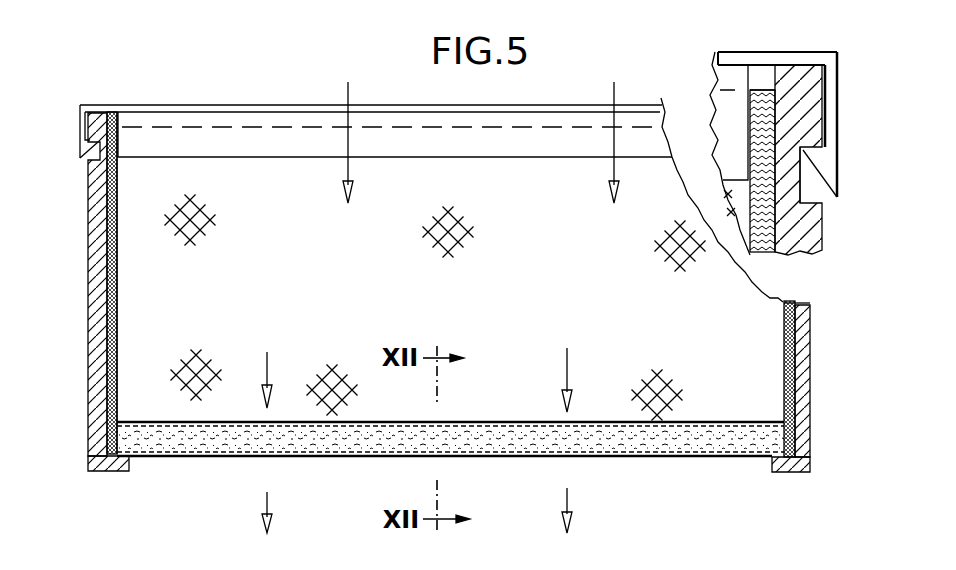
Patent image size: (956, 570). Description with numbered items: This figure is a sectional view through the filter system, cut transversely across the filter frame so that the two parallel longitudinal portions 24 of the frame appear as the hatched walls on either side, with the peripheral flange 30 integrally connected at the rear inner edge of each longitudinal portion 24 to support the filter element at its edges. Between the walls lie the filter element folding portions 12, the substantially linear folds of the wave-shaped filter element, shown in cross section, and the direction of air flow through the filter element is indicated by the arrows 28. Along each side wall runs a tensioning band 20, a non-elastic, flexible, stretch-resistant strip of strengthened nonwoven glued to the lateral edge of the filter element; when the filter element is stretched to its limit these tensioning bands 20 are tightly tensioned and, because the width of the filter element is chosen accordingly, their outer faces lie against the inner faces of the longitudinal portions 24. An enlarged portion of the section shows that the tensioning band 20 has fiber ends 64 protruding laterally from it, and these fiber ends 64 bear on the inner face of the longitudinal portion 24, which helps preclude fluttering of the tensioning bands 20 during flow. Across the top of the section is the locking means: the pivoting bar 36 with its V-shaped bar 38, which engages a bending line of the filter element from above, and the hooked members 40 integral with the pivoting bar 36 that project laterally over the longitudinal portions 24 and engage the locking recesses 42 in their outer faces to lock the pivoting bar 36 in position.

The filter element folding portions 12 is at (147, 385).
The tensioning bands 20 is at (117, 328).
The longitudinal portions 24 is at (97, 265).
The arrow 28 is at (348, 92).
The peripheral flange 30 is at (128, 473).
The pivoting bar 36 is at (180, 105).
The V-shaped bar 38 is at (248, 137).
The hooked members 40 is at (78, 137).
The locking recesses 42 is at (97, 157).
The fiber ends 64 is at (100, 302).